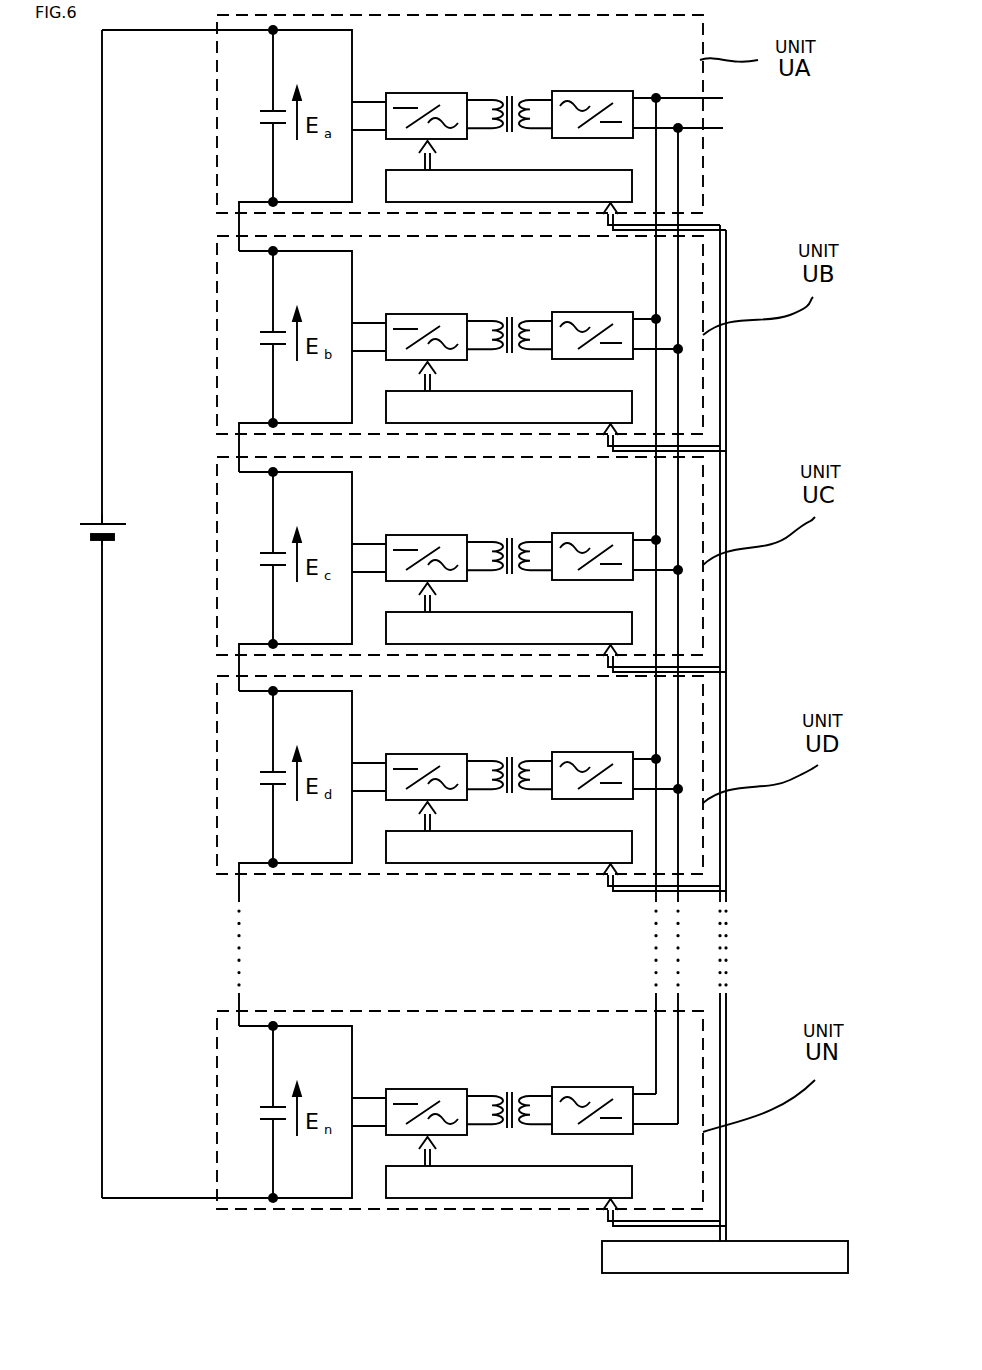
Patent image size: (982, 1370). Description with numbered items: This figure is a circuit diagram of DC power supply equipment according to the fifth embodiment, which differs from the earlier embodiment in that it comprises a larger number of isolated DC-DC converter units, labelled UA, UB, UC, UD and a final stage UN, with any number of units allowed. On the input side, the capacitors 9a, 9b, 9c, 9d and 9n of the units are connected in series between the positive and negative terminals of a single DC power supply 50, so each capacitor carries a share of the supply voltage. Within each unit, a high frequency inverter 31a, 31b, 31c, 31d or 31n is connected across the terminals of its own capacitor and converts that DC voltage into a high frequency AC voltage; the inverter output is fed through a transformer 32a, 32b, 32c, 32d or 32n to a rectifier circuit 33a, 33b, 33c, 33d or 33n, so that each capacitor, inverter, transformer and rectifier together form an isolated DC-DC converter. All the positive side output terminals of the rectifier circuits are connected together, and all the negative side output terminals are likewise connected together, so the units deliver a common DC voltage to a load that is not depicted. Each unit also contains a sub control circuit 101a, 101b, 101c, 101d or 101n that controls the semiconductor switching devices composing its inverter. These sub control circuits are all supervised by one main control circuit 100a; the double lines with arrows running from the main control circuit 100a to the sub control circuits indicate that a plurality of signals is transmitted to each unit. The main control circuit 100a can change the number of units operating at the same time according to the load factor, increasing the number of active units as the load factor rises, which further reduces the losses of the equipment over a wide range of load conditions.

The DC power supply 50 is at (98, 520).
The main control circuit 100a is at (803, 1254).
The capacitor 9a is at (263, 102).
The capacitor 9b is at (263, 323).
The capacitor 9c is at (263, 544).
The capacitor 9d is at (263, 763).
The capacitor 9n is at (263, 1098).
The high frequency inverter 31a is at (424, 100).
The high frequency inverter 31b is at (424, 321).
The high frequency inverter 31c is at (424, 542).
The high frequency inverter 31d is at (424, 761).
The high frequency inverter 31n is at (424, 1096).
The transformer 32a is at (508, 93).
The transformer 32b is at (508, 314).
The transformer 32c is at (508, 535).
The transformer 32d is at (508, 754).
The transformer 32n is at (508, 1089).
The rectifier circuit 33a is at (595, 100).
The rectifier circuit 33b is at (595, 321).
The rectifier circuit 33c is at (595, 542).
The rectifier circuit 33d is at (595, 761).
The rectifying circuit 33n is at (595, 1096).
The sub control circuit 101a is at (477, 180).
The sub control circuit 101b is at (477, 401).
The sub control circuit 101c is at (477, 622).
The sub control circuit 101d is at (477, 841).
The sub control circuit 101n is at (477, 1176).